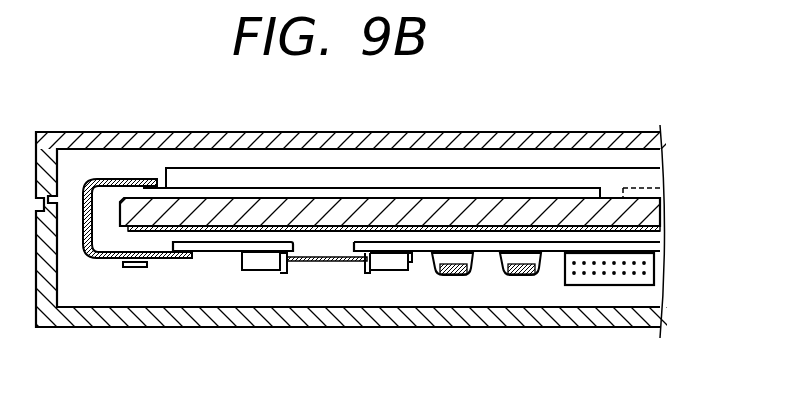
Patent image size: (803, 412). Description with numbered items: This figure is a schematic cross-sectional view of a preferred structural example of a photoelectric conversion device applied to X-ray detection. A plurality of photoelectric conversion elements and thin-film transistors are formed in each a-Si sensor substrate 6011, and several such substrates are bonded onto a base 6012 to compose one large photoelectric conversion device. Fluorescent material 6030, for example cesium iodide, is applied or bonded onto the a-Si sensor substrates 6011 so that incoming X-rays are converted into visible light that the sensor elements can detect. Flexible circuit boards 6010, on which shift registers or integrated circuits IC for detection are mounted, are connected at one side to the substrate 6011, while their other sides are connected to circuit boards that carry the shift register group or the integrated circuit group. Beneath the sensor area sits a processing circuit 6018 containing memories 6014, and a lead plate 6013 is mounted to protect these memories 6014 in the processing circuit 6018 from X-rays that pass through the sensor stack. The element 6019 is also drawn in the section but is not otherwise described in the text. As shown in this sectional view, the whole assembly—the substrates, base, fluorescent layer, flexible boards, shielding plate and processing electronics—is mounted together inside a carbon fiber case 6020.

The carbon fiber case 6020 is at (126, 135).
The a-Si sensor substrate 6011 is at (296, 196).
The fluorescent material 6030 is at (656, 178).
The base 6012 is at (656, 211).
The lead plate 6013 is at (656, 230).
The processing circuit 6018 is at (656, 252).
The connector 6019 is at (388, 262).
The memories 6014 is at (519, 276).
The flexible circuit board 6010 is at (100, 259).
The integrated circuit for detection IC is at (136, 281).